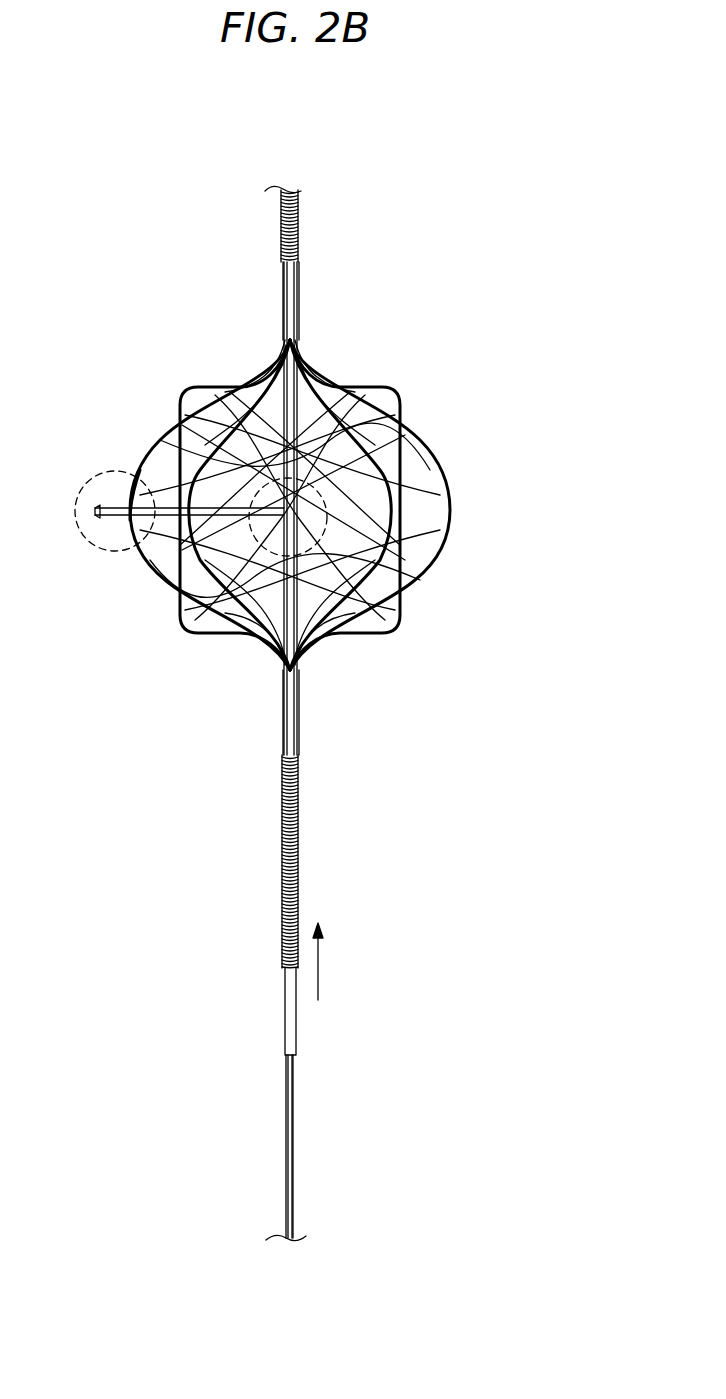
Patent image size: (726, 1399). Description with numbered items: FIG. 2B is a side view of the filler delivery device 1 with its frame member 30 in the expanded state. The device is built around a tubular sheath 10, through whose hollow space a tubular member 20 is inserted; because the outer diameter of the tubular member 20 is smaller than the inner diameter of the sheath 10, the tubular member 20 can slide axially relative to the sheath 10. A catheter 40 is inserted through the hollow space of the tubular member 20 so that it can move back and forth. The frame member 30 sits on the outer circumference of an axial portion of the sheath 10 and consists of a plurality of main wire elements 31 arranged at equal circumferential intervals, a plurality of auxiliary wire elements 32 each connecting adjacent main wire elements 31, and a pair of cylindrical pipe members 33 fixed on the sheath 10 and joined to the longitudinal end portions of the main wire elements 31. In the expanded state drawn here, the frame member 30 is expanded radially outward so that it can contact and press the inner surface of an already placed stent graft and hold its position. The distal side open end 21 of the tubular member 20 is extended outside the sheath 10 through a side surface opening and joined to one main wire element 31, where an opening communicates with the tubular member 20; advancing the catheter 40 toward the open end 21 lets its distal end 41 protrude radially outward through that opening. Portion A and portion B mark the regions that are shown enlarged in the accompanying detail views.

The filler delivery device 1 is at (286, 178).
The tubular sheath 10 is at (392, 589).
The tubular member 20 is at (285, 1018).
The distal side open end 21 is at (130, 490).
The frame member 30 is at (344, 508).
The main wire element 31 is at (392, 388).
The auxiliary wire element 32 is at (392, 405).
The cylindrical pipe member 33 is at (300, 210).
The catheter 40 is at (288, 1137).
The distal end of the catheter 41 is at (97, 512).
The portion A is at (307, 474).
The portion B is at (103, 470).